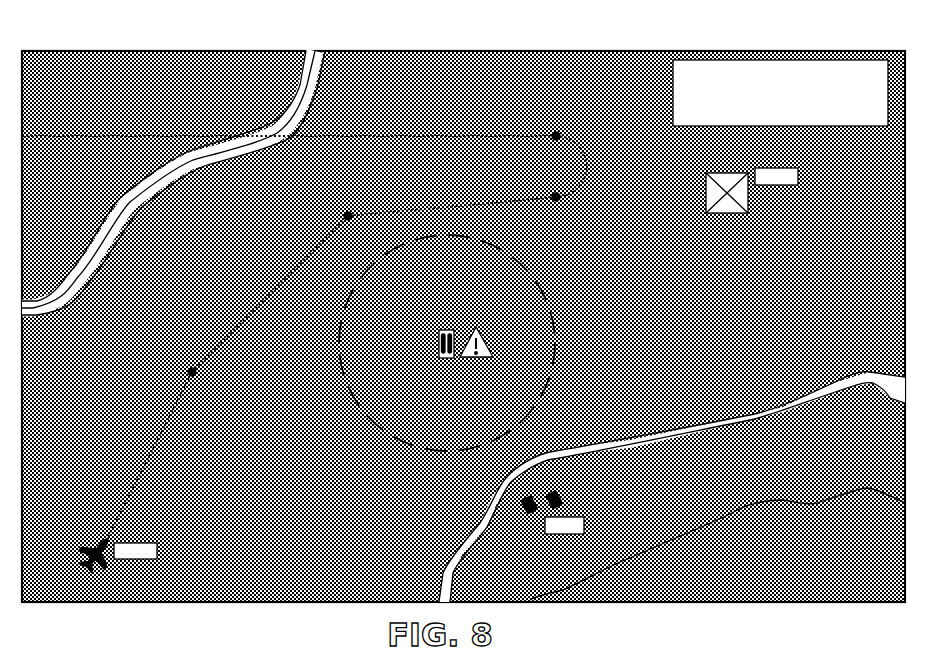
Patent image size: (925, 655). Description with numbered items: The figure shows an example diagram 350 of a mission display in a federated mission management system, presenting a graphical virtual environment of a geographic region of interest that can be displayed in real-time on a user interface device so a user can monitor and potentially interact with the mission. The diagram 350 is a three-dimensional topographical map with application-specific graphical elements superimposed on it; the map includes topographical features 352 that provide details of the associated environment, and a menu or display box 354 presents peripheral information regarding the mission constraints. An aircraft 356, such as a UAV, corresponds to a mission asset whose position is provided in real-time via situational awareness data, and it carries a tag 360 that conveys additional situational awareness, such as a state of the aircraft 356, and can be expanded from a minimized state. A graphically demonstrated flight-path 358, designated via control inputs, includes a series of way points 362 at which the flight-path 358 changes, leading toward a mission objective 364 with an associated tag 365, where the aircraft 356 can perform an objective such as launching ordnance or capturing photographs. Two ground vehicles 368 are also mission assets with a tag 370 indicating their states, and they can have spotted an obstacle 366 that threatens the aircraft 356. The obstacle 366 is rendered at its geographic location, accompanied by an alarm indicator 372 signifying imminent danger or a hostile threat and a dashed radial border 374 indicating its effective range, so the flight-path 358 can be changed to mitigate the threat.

The diagram 350 is at (110, 42).
The topographical features 352 is at (270, 105).
The display box 354 is at (673, 90).
The aircraft 356 is at (97, 538).
The flight-path 358 is at (137, 133).
The tag 360 is at (157, 548).
The way points 362 is at (556, 136).
The mission objective 364 is at (718, 213).
The tag 365 is at (780, 185).
The obstacle 366 is at (446, 330).
The ground vehicles 368 is at (567, 490).
The tag 370 is at (587, 520).
The alarm indicator 372 is at (482, 330).
The dashed radial border 374 is at (397, 435).